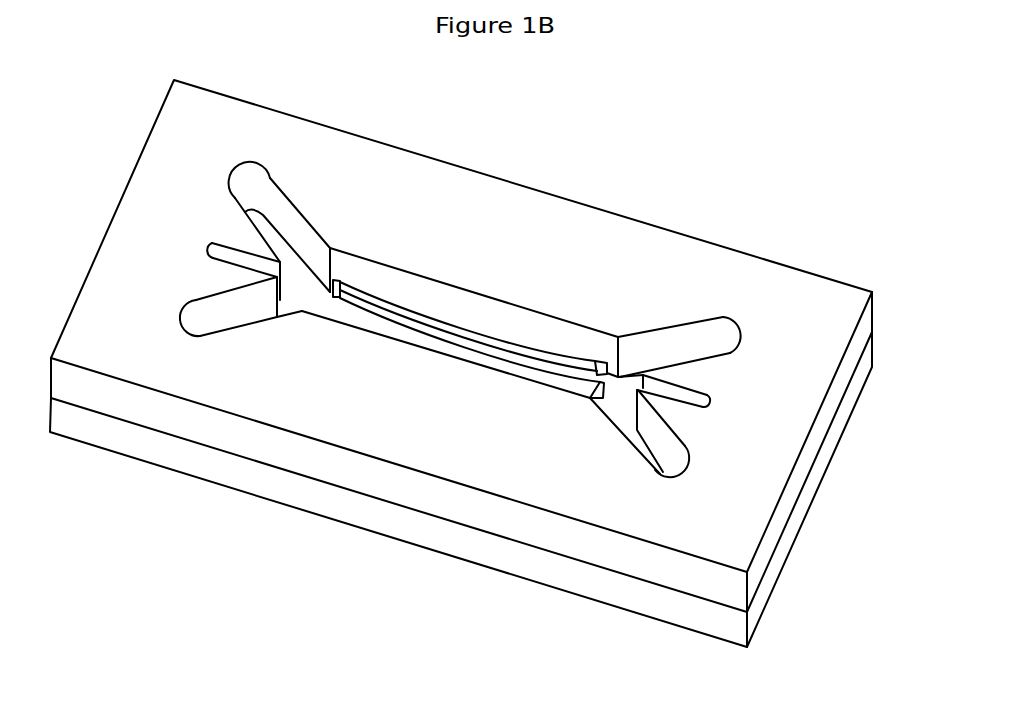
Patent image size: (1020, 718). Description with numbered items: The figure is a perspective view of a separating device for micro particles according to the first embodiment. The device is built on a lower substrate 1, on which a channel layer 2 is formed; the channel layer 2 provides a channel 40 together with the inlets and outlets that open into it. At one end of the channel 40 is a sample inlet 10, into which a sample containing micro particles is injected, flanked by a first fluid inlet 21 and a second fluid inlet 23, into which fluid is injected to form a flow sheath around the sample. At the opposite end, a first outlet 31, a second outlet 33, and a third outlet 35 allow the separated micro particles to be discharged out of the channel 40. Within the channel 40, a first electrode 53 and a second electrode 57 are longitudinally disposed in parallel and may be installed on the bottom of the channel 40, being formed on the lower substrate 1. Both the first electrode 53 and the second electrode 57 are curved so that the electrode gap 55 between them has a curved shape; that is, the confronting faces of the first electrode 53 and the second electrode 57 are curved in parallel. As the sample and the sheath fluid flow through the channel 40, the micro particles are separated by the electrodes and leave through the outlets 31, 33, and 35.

The lower substrate 1 is at (758, 602).
The channel layer 2 is at (862, 332).
The sample inlet 10 is at (223, 250).
The first fluid inlet 21 is at (258, 197).
The second fluid inlet 23 is at (195, 315).
The first outlet 31 is at (715, 337).
The second outlet 33 is at (653, 462).
The third outlet 35 is at (712, 407).
The channel 40 is at (540, 332).
The first electrode 53 is at (400, 310).
The electrode gap 55 is at (447, 345).
The second electrode 57 is at (353, 322).